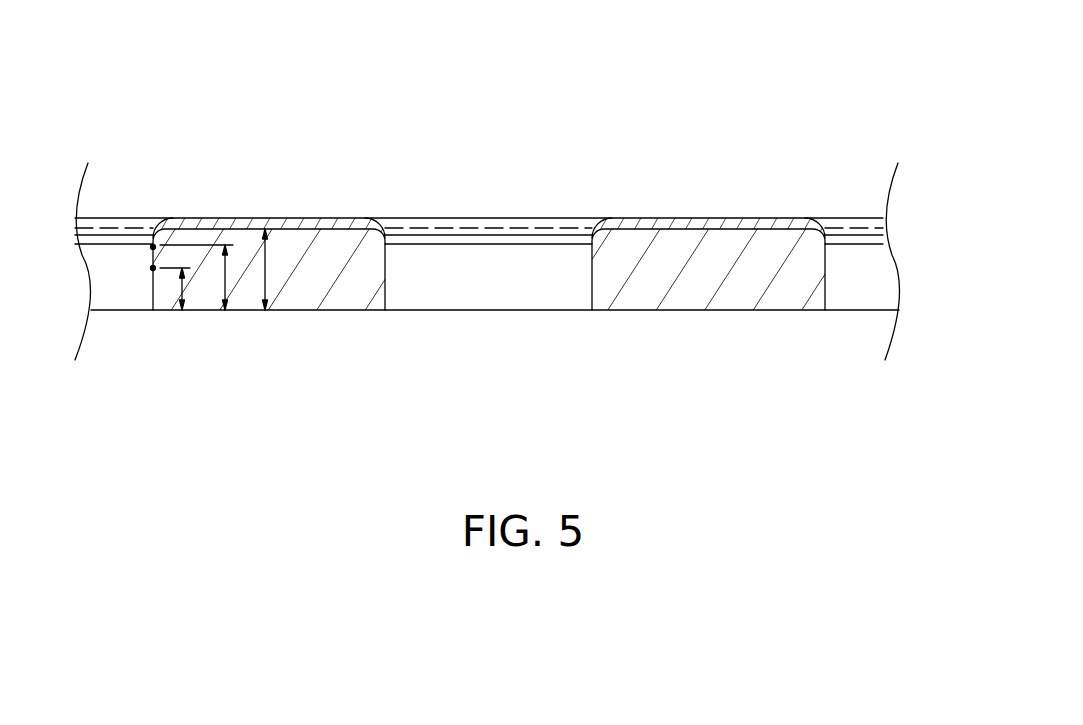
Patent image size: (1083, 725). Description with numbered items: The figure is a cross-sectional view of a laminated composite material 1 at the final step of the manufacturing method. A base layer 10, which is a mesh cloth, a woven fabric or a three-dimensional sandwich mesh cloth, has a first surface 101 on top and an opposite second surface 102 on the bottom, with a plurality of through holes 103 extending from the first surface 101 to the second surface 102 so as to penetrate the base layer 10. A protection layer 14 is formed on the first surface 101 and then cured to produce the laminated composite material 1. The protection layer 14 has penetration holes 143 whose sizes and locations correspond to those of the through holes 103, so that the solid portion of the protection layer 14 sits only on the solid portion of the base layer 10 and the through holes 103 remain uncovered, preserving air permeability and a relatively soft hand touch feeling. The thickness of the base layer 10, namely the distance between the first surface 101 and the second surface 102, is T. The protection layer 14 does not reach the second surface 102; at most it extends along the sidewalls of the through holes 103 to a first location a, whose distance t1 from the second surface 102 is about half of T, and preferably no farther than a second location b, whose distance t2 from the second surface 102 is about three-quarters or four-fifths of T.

The laminated composite material 1 is at (526, 220).
The base layer 10 is at (526, 265).
The first surface 101 is at (568, 227).
The second surface 102 is at (553, 310).
The through holes 103 is at (413, 246).
The protection layer 14 is at (707, 225).
The penetration holes 143 is at (467, 225).
The thickness of the base layer T is at (252, 269).
The distance between the first location and the second surface t1 is at (173, 289).
The distance between the second location and the second surface t2 is at (196, 277).
The first location a is at (153, 268).
The second location b is at (153, 247).